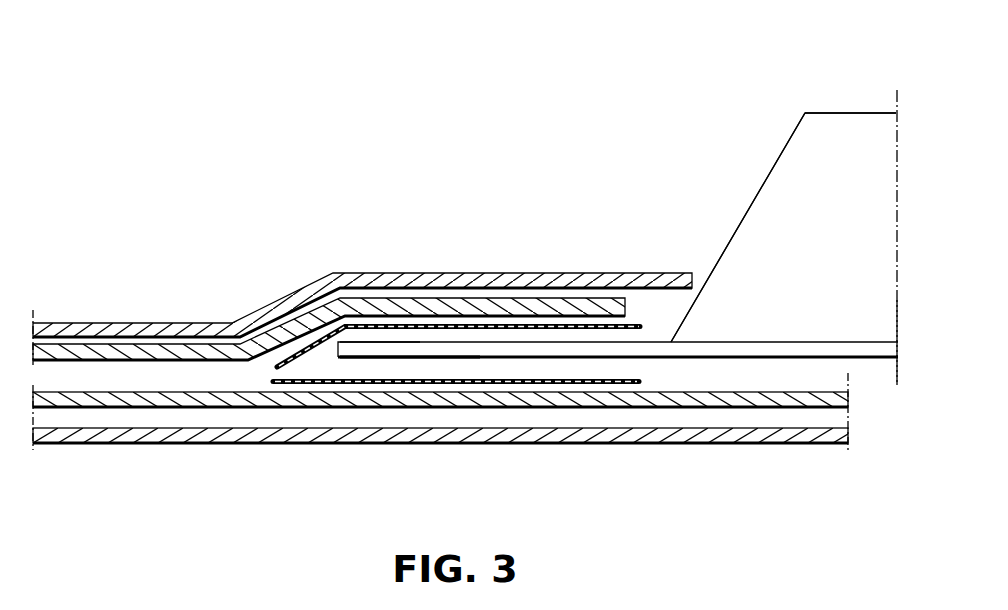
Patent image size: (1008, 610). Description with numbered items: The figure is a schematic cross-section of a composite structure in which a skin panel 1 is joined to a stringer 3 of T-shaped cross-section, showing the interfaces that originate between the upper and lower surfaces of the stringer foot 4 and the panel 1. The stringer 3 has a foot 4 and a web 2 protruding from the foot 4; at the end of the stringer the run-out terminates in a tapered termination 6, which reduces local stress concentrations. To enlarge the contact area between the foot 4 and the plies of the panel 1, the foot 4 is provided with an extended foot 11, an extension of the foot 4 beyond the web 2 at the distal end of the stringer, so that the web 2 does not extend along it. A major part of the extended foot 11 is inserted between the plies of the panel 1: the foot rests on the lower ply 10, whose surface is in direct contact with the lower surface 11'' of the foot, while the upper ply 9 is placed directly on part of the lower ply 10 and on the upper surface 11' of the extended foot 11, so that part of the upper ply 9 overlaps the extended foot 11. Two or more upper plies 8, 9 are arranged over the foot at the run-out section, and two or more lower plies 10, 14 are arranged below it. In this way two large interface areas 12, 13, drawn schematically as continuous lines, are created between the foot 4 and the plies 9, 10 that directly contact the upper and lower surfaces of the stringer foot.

The skin panel 1 is at (194, 448).
The web 2 is at (823, 112).
The stringer 3 is at (857, 155).
The foot 4 is at (883, 348).
The tapered termination 6 is at (765, 178).
The upper ply 8 is at (70, 327).
The upper ply 9 is at (107, 352).
The lower ply 10 is at (92, 398).
The extended foot 11 is at (618, 426).
The upper surface of the extended foot 11' is at (375, 260).
The lower surface of the foot 11'' is at (410, 433).
The interface area 12 is at (633, 320).
The interface area 13 is at (635, 380).
The lower ply 14 is at (118, 433).